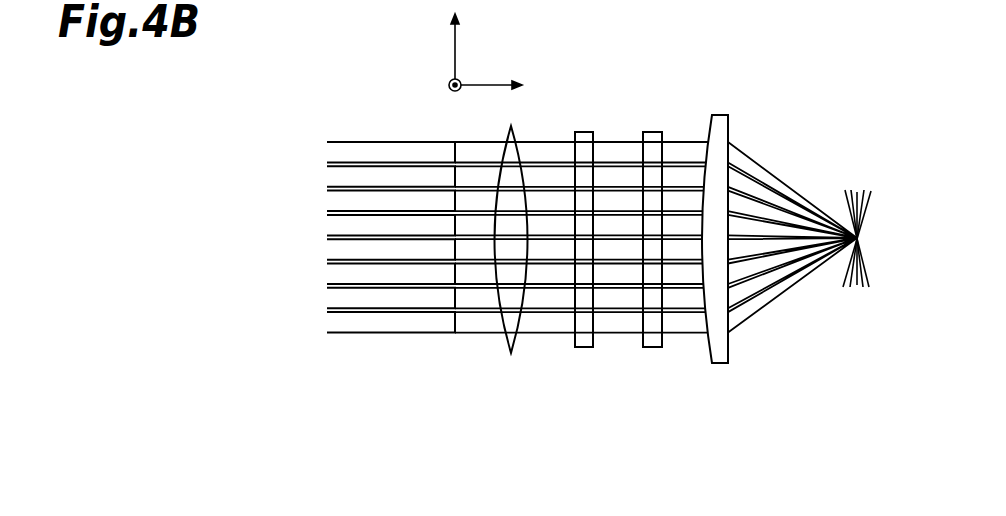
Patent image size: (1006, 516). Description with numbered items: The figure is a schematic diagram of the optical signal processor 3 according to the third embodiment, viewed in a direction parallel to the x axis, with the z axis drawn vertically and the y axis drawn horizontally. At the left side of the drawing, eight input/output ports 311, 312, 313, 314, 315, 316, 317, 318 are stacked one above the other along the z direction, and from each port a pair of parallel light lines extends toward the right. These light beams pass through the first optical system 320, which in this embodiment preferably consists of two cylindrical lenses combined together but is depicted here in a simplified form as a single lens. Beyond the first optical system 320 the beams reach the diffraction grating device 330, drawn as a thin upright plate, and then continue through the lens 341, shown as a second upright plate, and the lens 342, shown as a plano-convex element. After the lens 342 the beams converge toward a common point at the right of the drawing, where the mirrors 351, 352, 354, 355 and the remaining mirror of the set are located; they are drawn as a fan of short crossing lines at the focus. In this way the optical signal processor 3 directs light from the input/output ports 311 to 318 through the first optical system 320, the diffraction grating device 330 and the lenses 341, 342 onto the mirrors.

The optical signal processor 3 is at (372, 93).
The input/output port 311 is at (328, 152).
The input/output port 312 is at (328, 176).
The input/output port 313 is at (328, 201).
The input/output port 314 is at (328, 225).
The input/output port 315 is at (328, 249).
The input/output port 316 is at (328, 274).
The input/output port 317 is at (328, 298).
The input/output port 318 is at (328, 322).
The first optical system 320 is at (506, 343).
The diffraction grating device 330 is at (583, 347).
The lens 341 is at (651, 347).
The lens 342 is at (728, 353).
The mirror 351 is at (857, 238).
The mirror 352 is at (857, 238).
The mirror 354 is at (857, 238).
The mirror 355 is at (852, 288).